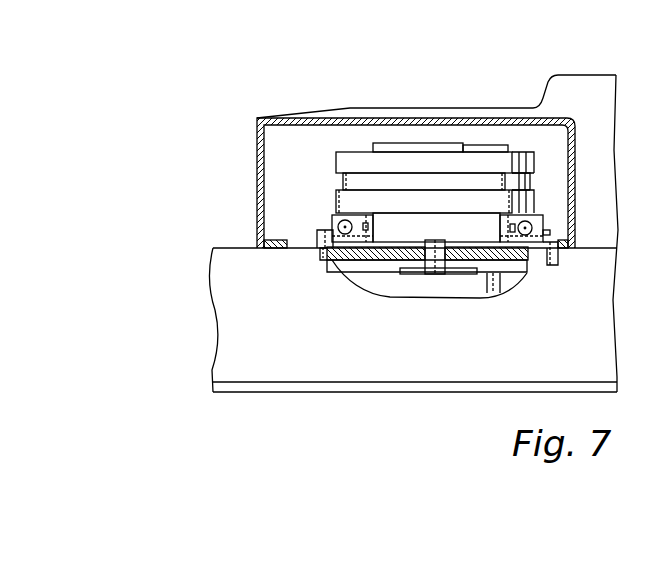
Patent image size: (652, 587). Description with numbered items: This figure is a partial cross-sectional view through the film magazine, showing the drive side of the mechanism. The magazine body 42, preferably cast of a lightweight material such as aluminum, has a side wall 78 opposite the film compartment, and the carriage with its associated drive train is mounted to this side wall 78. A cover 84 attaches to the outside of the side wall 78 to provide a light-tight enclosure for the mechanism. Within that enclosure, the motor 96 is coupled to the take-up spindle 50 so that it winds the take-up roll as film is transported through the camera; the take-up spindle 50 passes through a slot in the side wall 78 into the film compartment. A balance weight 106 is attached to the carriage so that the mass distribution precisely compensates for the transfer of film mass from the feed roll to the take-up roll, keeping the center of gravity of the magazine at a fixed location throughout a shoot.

The body 42 is at (238, 272).
The cover 84 is at (279, 120).
The weight 106 is at (385, 143).
The motor 96 is at (437, 165).
The side wall 78 is at (381, 250).
The take-up spindle 50 is at (437, 263).